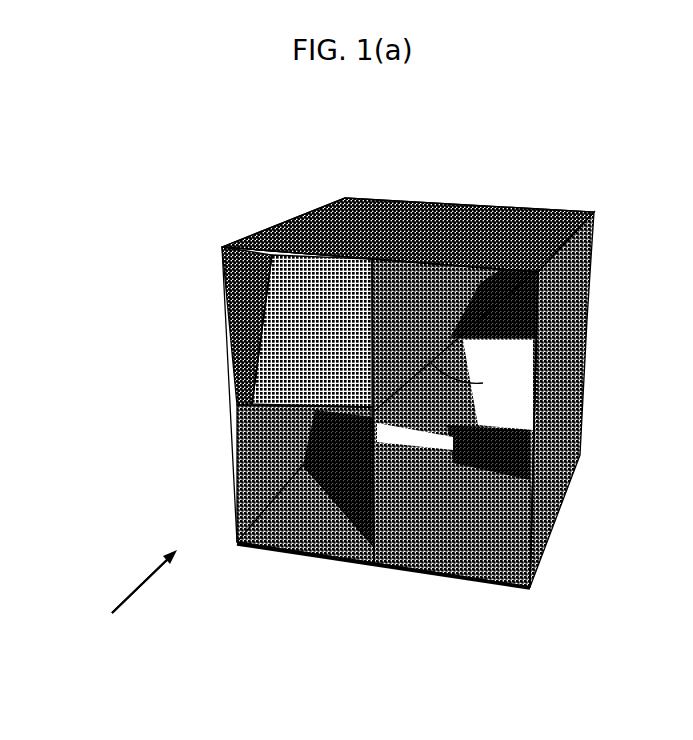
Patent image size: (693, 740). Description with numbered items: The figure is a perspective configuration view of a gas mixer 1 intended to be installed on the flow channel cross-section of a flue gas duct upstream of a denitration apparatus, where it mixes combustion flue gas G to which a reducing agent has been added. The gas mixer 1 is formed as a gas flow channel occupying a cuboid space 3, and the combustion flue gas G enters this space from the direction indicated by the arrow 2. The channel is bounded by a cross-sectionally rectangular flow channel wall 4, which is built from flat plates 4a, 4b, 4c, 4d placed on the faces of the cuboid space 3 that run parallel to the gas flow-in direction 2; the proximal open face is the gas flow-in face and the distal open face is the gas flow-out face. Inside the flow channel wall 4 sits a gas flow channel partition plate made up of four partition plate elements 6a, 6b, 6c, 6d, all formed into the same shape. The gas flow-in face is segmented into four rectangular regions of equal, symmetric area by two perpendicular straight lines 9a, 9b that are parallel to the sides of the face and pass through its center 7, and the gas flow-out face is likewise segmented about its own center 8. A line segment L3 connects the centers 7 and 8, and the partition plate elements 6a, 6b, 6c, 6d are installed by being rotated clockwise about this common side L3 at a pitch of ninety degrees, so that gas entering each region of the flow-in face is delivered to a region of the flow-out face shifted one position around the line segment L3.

The gas mixer 1 is at (414, 99).
The arrow indicating gas flow-in direction 2 is at (143, 588).
The cuboid space 3 is at (327, 197).
The cross-sectionally rectangular flow channel wall 4 is at (574, 397).
The flat plate 4a is at (468, 222).
The flat plate 4b is at (562, 363).
The flat plate 4c is at (430, 567).
The flat plate 4d is at (235, 452).
The partition plate element 6a is at (312, 331).
The partition plate element 6b is at (454, 341).
The partition plate element 6c is at (471, 429).
The partition plate element 6d is at (305, 478).
The center of the gas flow-in face 7 is at (377, 423).
The center of the gas flow-out face 8 is at (463, 338).
The straight line 9a is at (252, 403).
The straight line 9b is at (360, 533).
The line segment L3 is at (512, 385).
The combustion flue gas G is at (134, 596).